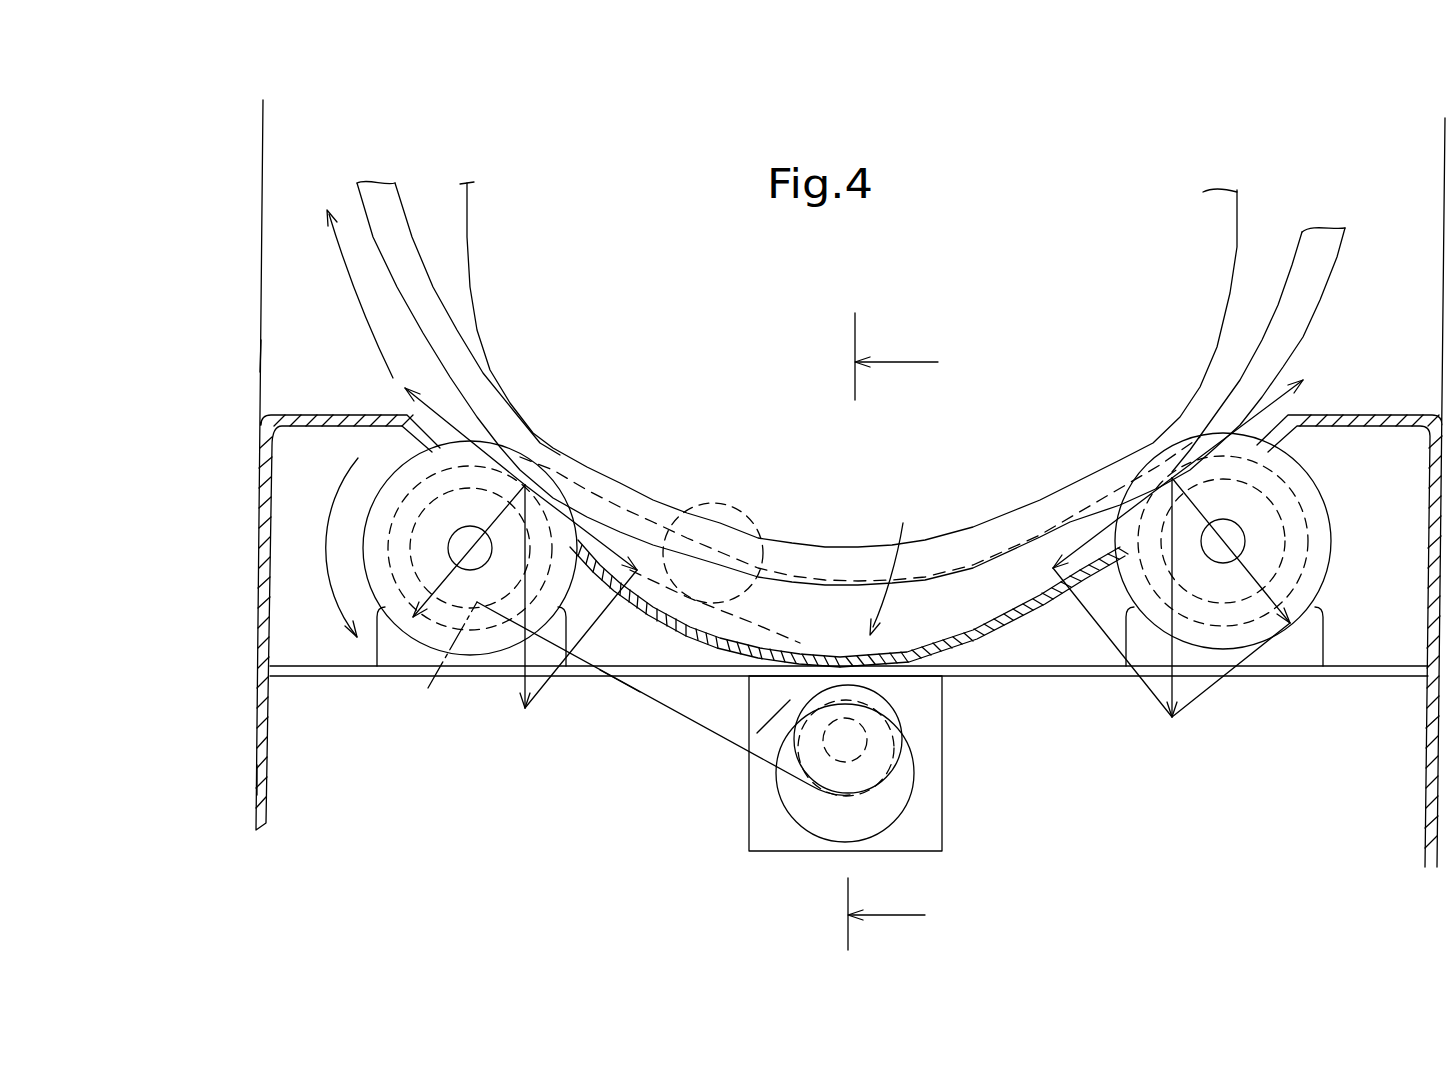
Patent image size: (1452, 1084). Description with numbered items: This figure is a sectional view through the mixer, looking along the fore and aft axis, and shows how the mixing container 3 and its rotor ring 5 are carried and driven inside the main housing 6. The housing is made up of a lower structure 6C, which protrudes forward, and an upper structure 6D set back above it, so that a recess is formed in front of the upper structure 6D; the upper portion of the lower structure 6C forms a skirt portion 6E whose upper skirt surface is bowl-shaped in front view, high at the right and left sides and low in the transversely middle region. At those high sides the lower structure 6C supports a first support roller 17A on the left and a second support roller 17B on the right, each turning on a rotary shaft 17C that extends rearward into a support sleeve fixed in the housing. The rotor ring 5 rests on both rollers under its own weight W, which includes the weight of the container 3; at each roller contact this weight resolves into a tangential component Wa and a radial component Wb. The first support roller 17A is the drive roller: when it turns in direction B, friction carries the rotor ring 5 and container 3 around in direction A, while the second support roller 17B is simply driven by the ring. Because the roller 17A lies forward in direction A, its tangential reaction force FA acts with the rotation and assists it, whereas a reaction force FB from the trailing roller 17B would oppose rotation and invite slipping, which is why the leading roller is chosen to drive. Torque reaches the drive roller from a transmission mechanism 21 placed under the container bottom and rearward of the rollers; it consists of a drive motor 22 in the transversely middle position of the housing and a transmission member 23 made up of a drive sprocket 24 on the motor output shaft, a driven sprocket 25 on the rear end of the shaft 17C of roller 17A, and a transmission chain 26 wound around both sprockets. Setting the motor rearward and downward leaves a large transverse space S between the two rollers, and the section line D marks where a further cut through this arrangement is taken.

The mixing container 3 is at (1237, 247).
The rotor ring 5 is at (420, 303).
The main housing 6 is at (248, 615).
The lower structure 6C is at (257, 780).
The upper structure 6D is at (275, 357).
The skirt portion 6E is at (1003, 614).
The first support roller 17A is at (525, 460).
The second support roller 17B is at (1180, 450).
The rotary shaft 17C is at (453, 533).
The transmission mechanism 21 is at (735, 813).
The drive motor 22 is at (905, 790).
The transmission member 23 is at (630, 693).
The drive sprocket 24 is at (757, 733).
The driven sprocket 25 is at (443, 663).
The transmission chain 26 is at (670, 712).
The direction of rotation A is at (352, 296).
The direction of rotation of drive roller B is at (328, 558).
The section line D is at (893, 631).
The transverse space S is at (897, 566).
The weight W is at (515, 660).
The tangential component Wa is at (600, 547).
The load component Wb is at (437, 600).
The tangential reaction force FA is at (440, 417).
The reaction force FB is at (1260, 407).